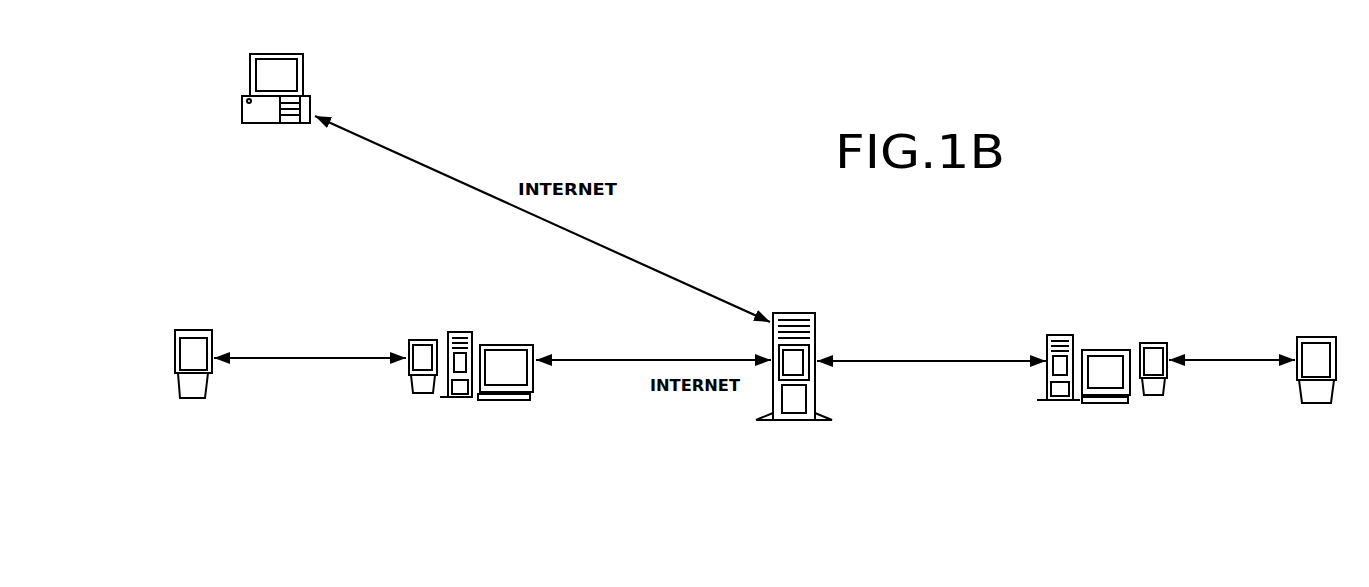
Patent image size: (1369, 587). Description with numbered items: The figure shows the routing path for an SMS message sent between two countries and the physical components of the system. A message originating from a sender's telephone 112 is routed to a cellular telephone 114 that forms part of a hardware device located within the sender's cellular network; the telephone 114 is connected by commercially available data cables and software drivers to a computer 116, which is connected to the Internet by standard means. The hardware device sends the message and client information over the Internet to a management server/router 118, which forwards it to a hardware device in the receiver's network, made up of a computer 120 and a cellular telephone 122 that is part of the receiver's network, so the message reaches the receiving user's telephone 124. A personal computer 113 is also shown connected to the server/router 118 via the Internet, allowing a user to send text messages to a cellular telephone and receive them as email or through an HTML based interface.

The sender's telephone 112 is at (197, 330).
The personal computer 113 is at (304, 62).
The cellular telephone 114 is at (420, 340).
The computer 116 is at (460, 332).
The server/router 118 is at (815, 343).
The computer 120 is at (1060, 335).
The cellular telephone 122 is at (1153, 343).
The receiver's telephone 124 is at (1318, 337).